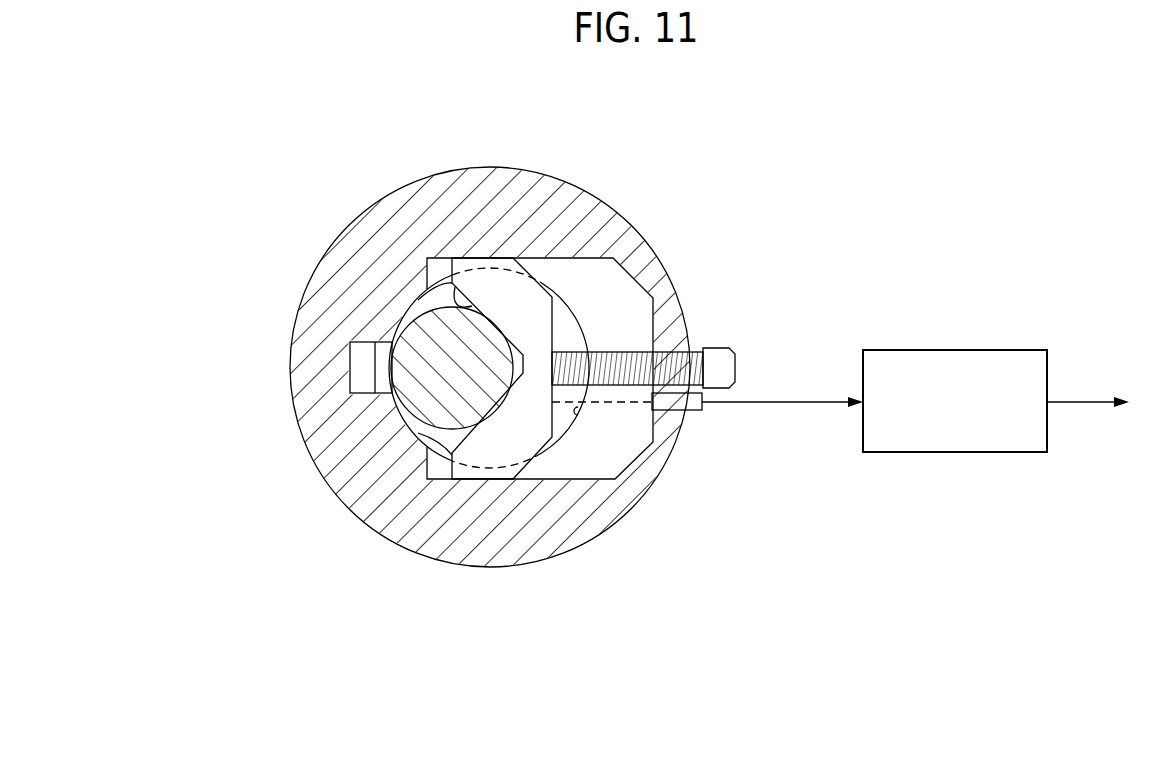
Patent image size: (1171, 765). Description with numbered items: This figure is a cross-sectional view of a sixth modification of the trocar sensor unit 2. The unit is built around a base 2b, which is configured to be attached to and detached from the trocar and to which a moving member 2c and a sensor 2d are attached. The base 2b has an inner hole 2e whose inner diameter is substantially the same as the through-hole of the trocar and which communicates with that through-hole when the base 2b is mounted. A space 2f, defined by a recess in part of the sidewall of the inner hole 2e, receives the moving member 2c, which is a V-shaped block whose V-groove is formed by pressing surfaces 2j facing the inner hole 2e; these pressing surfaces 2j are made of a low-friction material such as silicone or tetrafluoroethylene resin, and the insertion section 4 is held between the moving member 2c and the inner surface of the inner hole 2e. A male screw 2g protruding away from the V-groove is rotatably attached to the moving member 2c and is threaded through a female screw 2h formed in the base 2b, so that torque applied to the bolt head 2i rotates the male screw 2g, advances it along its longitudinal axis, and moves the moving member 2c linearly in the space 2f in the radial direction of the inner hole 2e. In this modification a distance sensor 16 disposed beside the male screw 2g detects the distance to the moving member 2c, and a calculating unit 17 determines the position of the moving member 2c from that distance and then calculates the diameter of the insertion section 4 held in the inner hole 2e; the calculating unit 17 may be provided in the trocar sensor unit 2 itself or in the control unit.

The trocar sensor unit 2 is at (768, 226).
The base 2b is at (603, 535).
The moving member 2c is at (555, 430).
The sensor 2d is at (350, 360).
The inner hole 2e is at (579, 412).
The space 2f is at (555, 268).
The male screw 2g is at (605, 350).
The female screw 2h is at (664, 362).
The bolt head 2i is at (715, 348).
The pressing surfaces 2j is at (474, 299).
The insertion section 4 is at (414, 307).
The distance sensor 16 is at (690, 411).
The calculating unit 17 is at (938, 350).